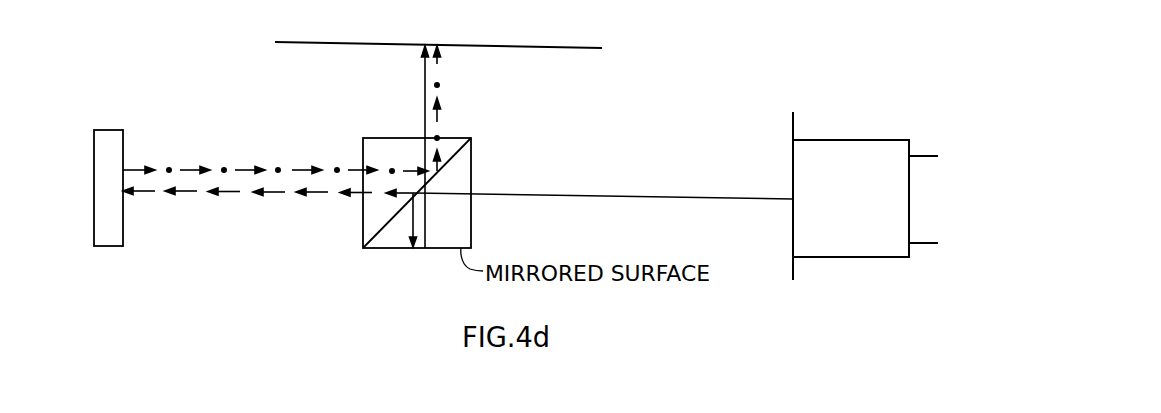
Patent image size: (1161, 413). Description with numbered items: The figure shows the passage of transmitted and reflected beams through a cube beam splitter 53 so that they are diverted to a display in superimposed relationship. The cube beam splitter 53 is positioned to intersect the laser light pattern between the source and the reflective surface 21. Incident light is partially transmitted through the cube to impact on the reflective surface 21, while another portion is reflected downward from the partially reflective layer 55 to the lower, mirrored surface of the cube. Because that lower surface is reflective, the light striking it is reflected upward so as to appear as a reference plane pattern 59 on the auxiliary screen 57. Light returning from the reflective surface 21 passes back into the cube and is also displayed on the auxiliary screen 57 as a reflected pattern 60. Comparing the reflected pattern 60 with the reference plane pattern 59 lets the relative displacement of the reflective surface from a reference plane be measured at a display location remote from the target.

The reflective surface 21 is at (123, 246).
The cube beam splitter 53 is at (471, 160).
The partially reflective layer 55 is at (383, 228).
The auxiliary screen 57 is at (535, 46).
The reference plane pattern 59 is at (424, 82).
The reflected pattern 60 is at (440, 70).